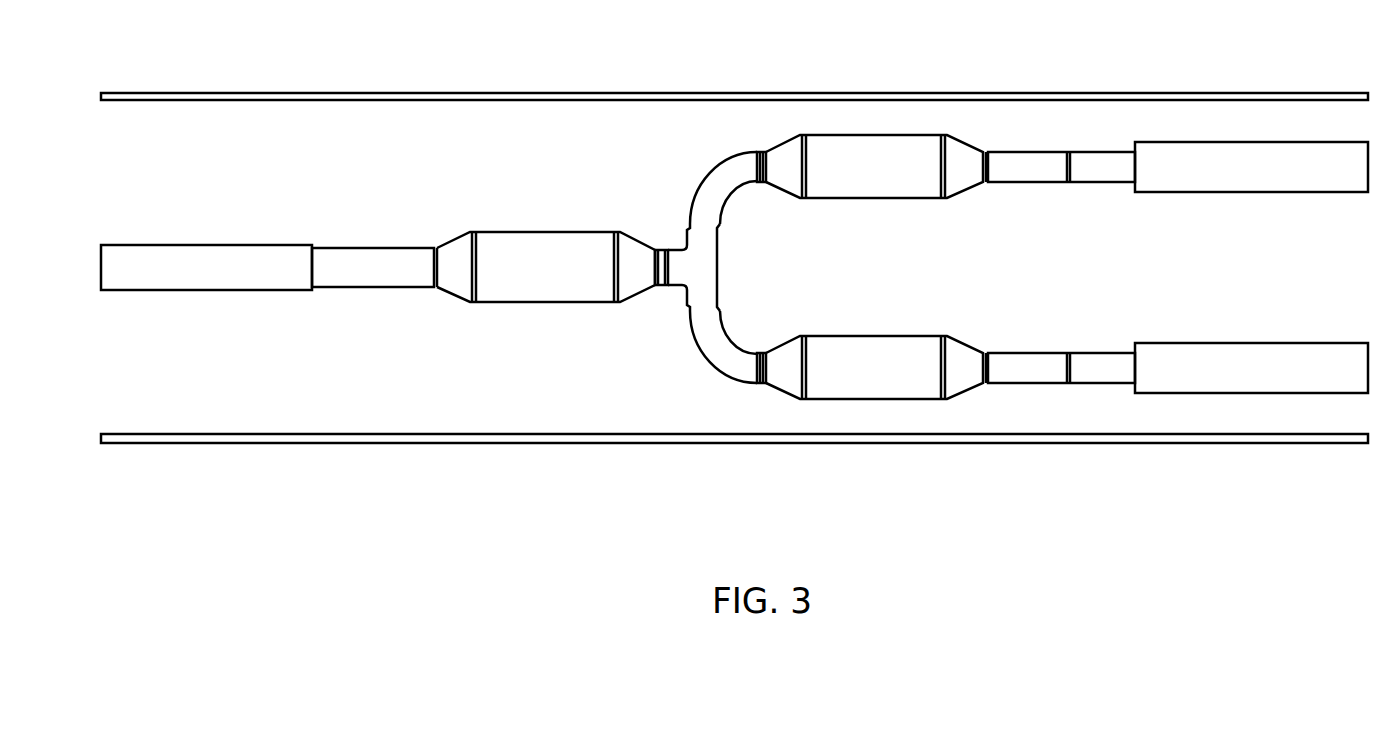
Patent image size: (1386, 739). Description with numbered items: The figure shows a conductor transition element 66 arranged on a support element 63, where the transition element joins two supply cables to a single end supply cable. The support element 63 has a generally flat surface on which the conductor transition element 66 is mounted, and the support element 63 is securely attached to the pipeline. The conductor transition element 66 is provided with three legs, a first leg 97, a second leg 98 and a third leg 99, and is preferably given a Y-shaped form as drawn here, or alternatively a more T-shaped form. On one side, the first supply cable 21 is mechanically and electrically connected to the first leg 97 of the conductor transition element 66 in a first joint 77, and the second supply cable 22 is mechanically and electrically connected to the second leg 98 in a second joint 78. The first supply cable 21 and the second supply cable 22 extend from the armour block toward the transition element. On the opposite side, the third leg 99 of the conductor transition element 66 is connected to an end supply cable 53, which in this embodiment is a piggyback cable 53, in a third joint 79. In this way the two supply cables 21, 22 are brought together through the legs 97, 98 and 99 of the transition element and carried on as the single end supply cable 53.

The first supply cable 21 is at (1236, 380).
The second supply cable 22 is at (1212, 158).
The end supply cable 53 is at (200, 258).
The support element 63 is at (650, 97).
The conductor transition element 66 is at (665, 273).
The first joint 77 is at (862, 381).
The second joint 78 is at (874, 160).
The third joint 79 is at (517, 292).
The first leg 97 is at (712, 367).
The second leg 98 is at (727, 163).
The third leg 99 is at (668, 253).